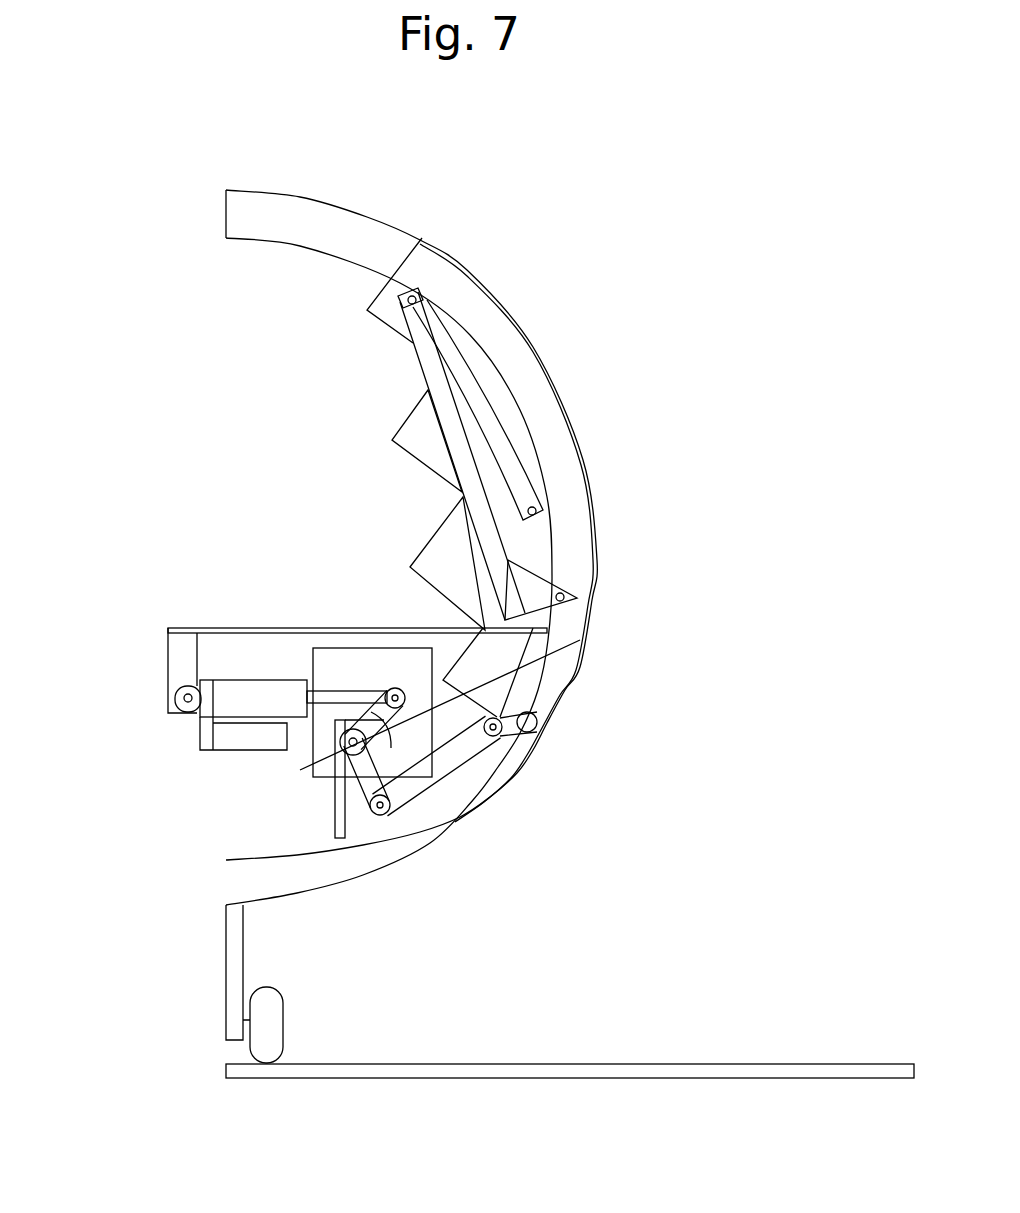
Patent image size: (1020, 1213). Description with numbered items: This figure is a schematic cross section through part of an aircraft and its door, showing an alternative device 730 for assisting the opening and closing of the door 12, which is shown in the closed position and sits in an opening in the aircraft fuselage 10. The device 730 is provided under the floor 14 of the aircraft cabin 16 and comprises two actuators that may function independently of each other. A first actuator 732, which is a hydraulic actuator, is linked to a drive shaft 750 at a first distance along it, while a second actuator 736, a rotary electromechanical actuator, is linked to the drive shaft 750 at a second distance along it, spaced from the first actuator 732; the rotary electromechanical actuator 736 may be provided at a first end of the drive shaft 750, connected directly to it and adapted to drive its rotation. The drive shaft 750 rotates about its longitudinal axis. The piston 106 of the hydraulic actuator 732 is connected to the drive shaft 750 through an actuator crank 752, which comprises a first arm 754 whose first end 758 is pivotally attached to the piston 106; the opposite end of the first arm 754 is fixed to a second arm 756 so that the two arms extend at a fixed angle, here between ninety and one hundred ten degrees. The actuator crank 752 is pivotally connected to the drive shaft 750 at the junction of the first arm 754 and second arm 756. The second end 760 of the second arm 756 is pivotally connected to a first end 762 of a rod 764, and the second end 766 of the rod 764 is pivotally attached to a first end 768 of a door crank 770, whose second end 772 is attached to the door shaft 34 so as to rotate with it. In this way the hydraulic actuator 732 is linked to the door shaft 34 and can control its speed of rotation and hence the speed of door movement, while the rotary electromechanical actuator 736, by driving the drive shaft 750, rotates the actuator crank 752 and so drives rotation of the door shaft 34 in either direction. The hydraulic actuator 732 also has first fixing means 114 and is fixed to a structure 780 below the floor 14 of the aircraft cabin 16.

The aircraft fuselage 10 is at (288, 177).
The door 12 is at (587, 460).
The floor 14 is at (200, 627).
The aircraft cabin 16 is at (255, 381).
The door shaft 34 is at (537, 710).
The piston 106 is at (347, 692).
The first fixing means 114 is at (178, 702).
The device 730 is at (187, 778).
The first actuator 732 is at (243, 680).
The second actuator 736 is at (343, 648).
The drive shaft 750 is at (345, 745).
The actuator crank 752 is at (340, 788).
The first arm 754 is at (580, 640).
The second arm 756 is at (372, 812).
The first end of the first arm 758 is at (400, 688).
The second end of the second arm 760 is at (392, 812).
The first end of the rod 762 is at (410, 825).
The rod 764 is at (462, 760).
The second end of the rod 766 is at (500, 715).
The first end of the door crank 768 is at (500, 735).
The door crank 770 is at (505, 731).
The second end of the door crank 772 is at (547, 723).
The structure 780 is at (178, 652).